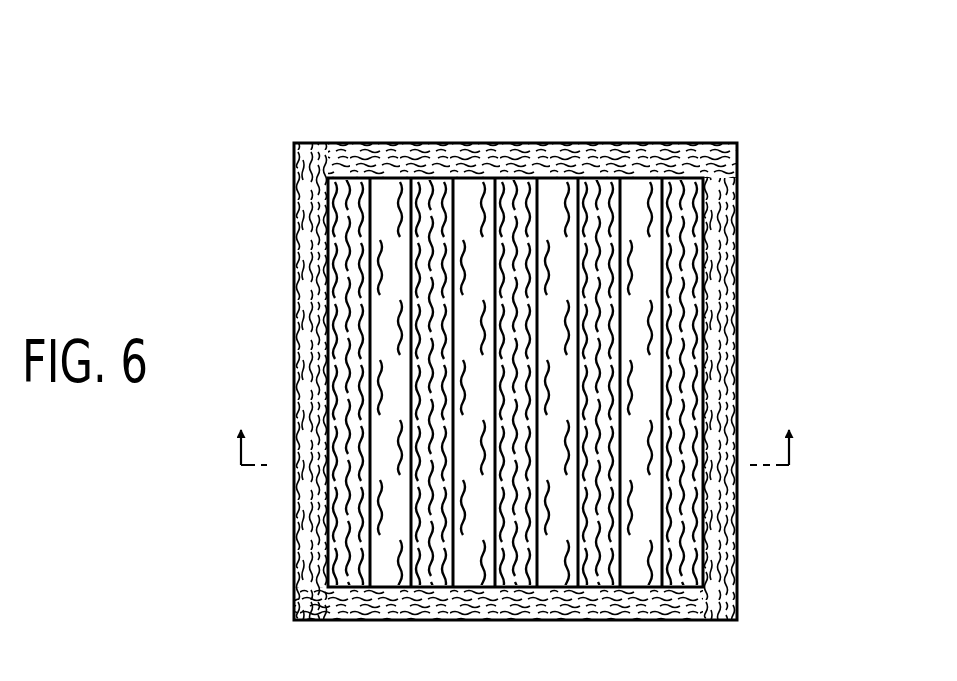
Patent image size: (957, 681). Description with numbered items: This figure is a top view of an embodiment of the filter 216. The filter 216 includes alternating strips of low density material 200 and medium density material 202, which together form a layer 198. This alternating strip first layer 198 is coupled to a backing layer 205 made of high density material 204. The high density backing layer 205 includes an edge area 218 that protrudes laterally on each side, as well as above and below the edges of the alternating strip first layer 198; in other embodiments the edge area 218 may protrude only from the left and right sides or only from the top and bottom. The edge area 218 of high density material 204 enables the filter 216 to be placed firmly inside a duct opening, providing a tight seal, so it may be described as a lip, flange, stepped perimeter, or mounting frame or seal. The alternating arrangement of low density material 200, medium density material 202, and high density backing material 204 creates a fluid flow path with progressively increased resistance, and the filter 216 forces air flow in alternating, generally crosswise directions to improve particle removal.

The layer 198 is at (324, 201).
The low density material 200 is at (478, 196).
The medium density material 202 is at (688, 196).
The high density material 204 is at (558, 163).
The backing layer 205 is at (347, 138).
The filter 216 is at (749, 81).
The edge area 218 is at (523, 152).